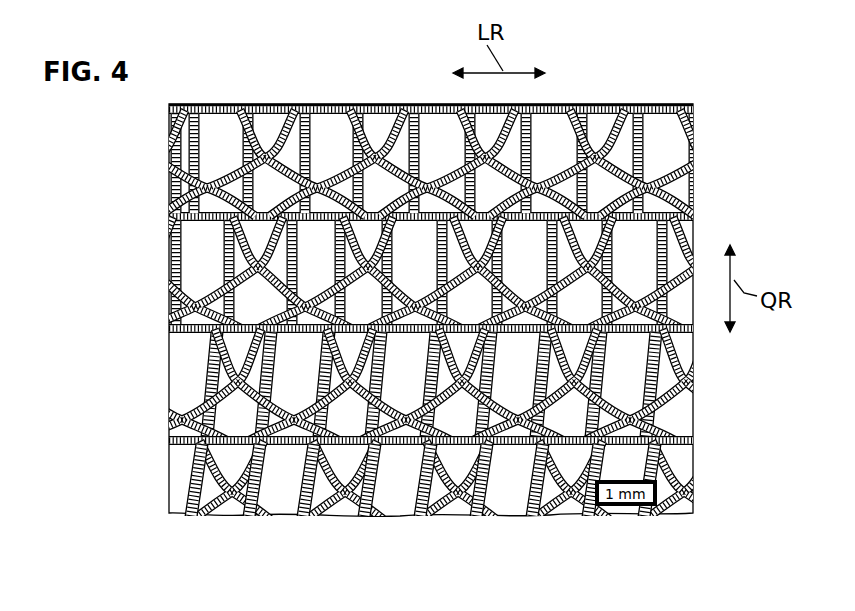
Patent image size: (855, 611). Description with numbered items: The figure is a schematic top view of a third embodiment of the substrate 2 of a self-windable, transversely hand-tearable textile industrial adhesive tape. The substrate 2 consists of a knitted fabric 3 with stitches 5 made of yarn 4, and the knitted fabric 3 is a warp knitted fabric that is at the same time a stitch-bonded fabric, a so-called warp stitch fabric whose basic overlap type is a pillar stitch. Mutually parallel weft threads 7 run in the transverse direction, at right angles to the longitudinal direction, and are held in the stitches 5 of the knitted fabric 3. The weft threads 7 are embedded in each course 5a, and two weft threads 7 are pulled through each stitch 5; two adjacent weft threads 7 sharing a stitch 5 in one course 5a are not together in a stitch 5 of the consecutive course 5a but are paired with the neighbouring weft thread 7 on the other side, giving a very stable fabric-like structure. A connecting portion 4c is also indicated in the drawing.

The substrate 2 is at (160, 381).
The knitted fabric 3 is at (178, 163).
The yarn 4 is at (182, 462).
The connecting portion 4c is at (168, 216).
The stitch 5 is at (168, 312).
The course 5a is at (159, 205).
The weft thread 7 is at (423, 517).